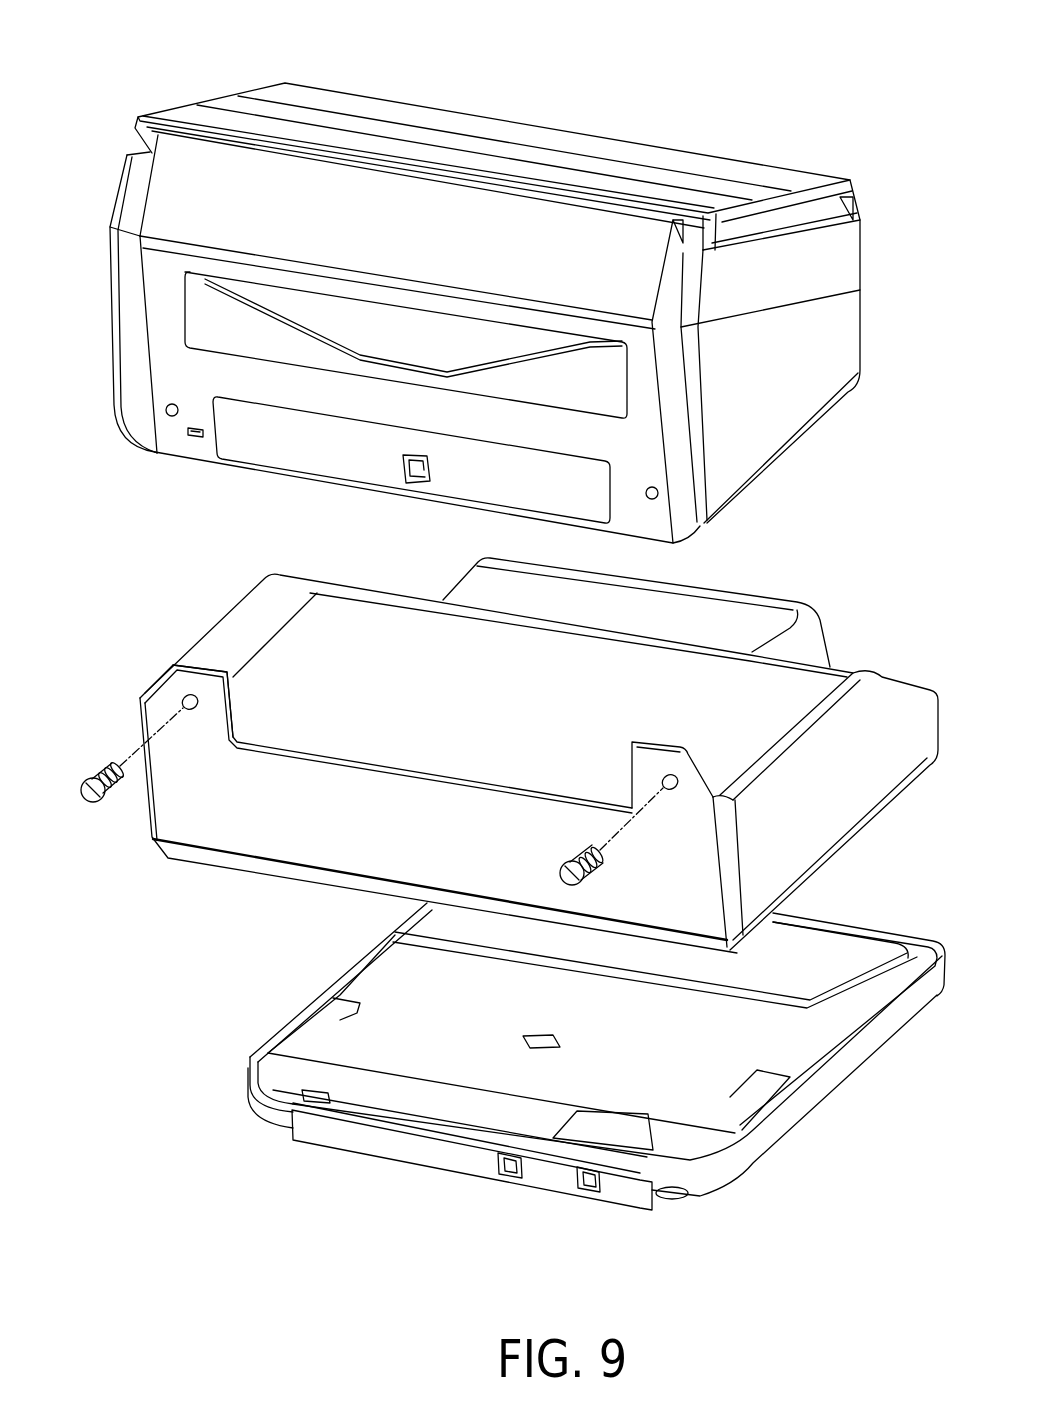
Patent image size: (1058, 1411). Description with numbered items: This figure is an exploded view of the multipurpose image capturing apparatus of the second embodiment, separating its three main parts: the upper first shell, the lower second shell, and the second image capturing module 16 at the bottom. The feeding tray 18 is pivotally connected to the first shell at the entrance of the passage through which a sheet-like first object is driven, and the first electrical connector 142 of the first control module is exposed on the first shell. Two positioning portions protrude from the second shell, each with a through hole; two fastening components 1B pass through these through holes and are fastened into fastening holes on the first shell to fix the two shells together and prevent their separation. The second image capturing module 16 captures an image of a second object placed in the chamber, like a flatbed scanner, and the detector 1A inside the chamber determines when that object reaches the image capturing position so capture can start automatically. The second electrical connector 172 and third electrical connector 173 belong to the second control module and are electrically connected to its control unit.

The feeding tray 18 is at (187, 113).
The first electrical connector 142 is at (415, 486).
The fastening component 1B is at (83, 787).
The second image capturing module 16 is at (813, 1010).
The detector 1A is at (545, 1034).
The second electrical connector 172 is at (513, 1179).
The third electrical connector 173 is at (590, 1194).